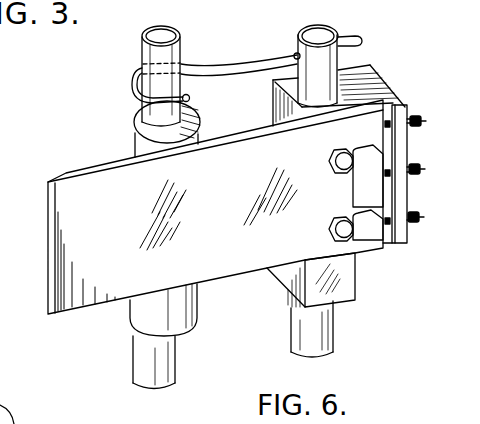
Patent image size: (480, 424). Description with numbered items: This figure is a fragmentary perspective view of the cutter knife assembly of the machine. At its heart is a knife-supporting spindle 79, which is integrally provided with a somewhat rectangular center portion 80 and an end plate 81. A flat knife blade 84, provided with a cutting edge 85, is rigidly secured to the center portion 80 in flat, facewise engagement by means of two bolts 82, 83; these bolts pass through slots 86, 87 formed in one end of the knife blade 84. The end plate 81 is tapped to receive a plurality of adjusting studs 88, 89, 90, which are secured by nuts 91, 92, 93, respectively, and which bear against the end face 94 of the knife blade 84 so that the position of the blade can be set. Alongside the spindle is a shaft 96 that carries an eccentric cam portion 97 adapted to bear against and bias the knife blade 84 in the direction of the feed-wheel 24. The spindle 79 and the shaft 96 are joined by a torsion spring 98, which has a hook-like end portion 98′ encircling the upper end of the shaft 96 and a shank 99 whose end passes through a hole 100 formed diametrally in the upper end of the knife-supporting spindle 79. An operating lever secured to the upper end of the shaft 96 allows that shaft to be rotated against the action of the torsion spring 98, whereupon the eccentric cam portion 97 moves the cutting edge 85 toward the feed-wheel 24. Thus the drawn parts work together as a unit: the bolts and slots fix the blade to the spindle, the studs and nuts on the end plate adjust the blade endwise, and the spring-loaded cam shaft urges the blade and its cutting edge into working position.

The feed-wheel 24 is at (12, 418).
The knife-supporting spindle 79 is at (340, 58).
The center portion 80 is at (345, 290).
The end plate 81 is at (380, 87).
The bolt 82 is at (329, 152).
The bolt 83 is at (328, 231).
The knife blade 84 is at (245, 283).
The cutting edge 85 is at (48, 250).
The slot 86 is at (370, 158).
The slot 87 is at (371, 210).
The adjusting stud 88 is at (424, 119).
The adjusting stud 89 is at (424, 167).
The adjusting stud 90 is at (422, 212).
The nut 91 is at (410, 108).
The nut 92 is at (418, 174).
The nut 93 is at (416, 224).
The end face 94 is at (384, 244).
The shaft 96 is at (140, 369).
The eccentric cam portion 97 is at (178, 327).
The torsion spring 98 is at (253, 52).
The hook-like end portion 98′ is at (136, 80).
The shank 99 is at (346, 36).
The hole 100 is at (286, 68).